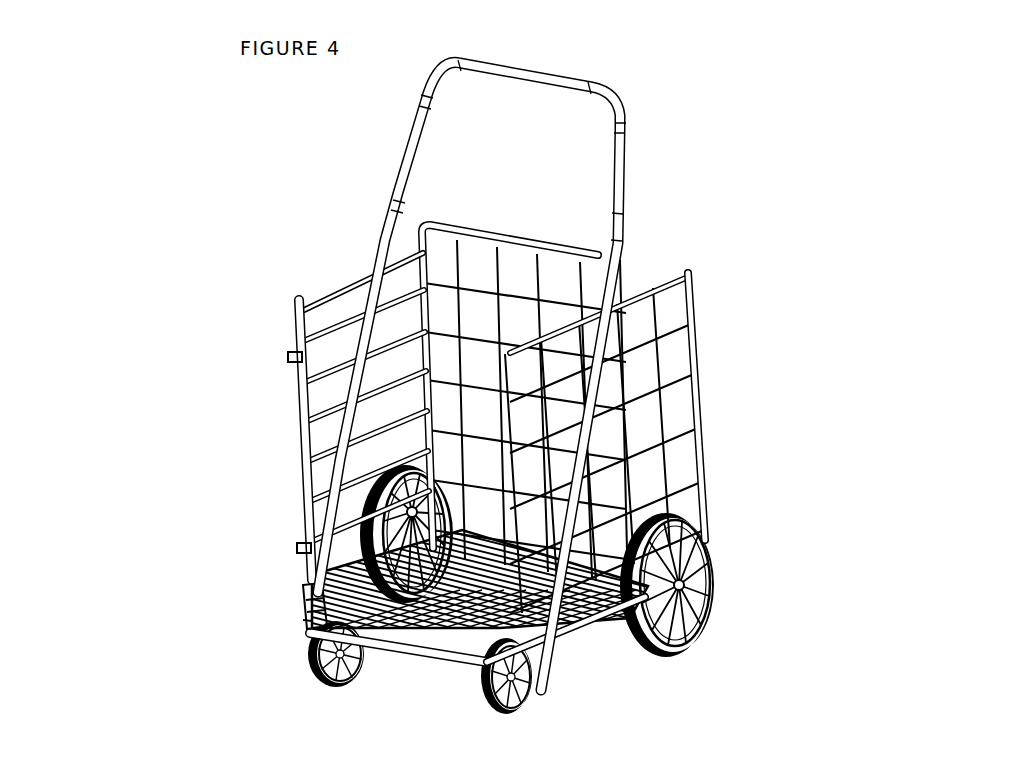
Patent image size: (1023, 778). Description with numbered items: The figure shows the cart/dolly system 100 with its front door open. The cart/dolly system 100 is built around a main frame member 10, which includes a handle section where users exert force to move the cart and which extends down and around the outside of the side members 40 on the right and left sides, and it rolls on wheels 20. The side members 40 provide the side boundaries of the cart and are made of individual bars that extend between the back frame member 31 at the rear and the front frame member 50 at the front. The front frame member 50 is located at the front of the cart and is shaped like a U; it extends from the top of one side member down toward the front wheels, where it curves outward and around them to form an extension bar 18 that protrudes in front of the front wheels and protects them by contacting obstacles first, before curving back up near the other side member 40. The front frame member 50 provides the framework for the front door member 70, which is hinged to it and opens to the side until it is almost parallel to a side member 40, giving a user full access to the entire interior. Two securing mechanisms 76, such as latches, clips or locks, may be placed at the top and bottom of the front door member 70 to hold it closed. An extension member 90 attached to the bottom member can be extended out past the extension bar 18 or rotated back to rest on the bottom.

The cart/dolly system 100 is at (910, 389).
The main frame member 10 is at (648, 120).
The wheels 20 is at (547, 712).
The extension bar 18 is at (446, 670).
The back frame member 31 is at (524, 236).
The side members 40 is at (305, 246).
The front frame member 50 is at (288, 418).
The front door member 70 is at (719, 341).
The securing mechanism 76 is at (293, 529).
The extension member 90 is at (306, 619).